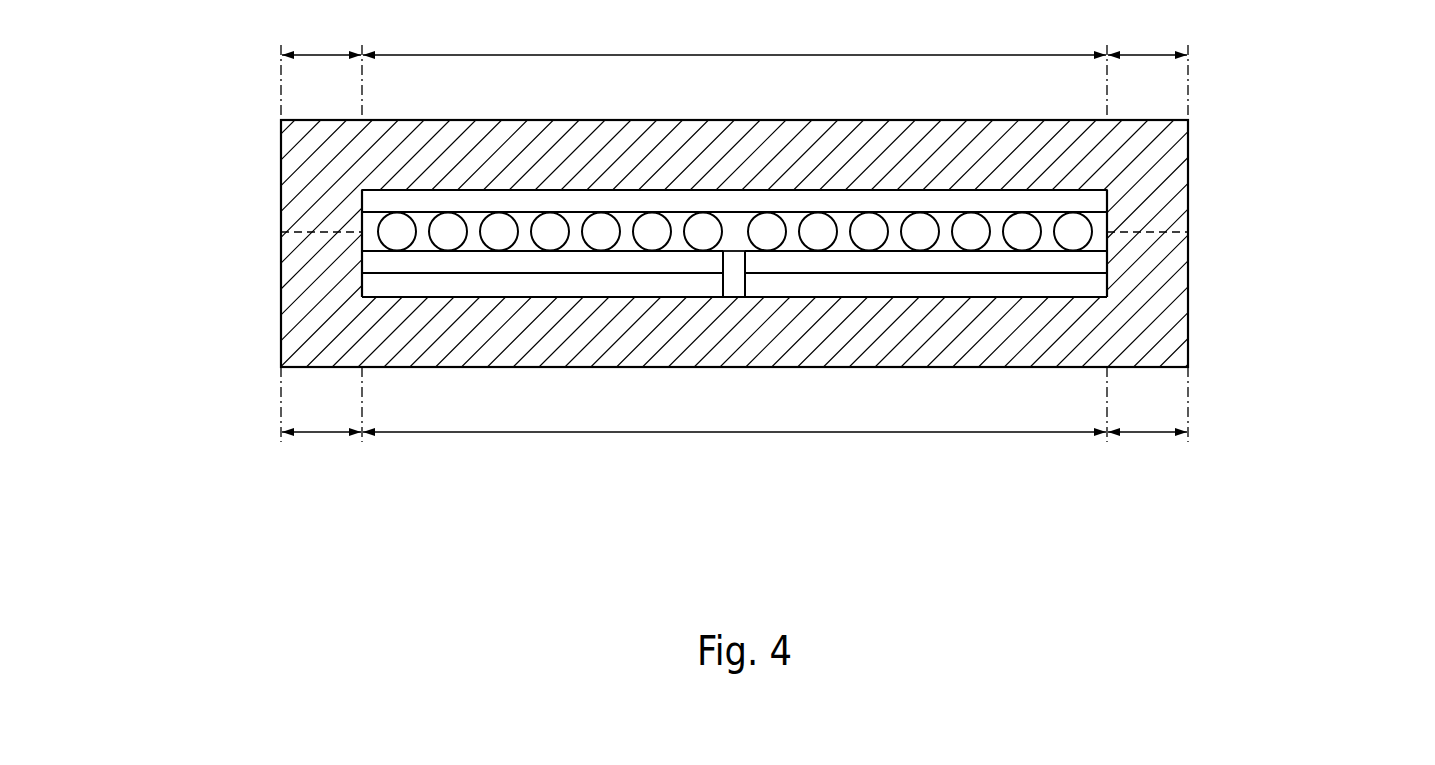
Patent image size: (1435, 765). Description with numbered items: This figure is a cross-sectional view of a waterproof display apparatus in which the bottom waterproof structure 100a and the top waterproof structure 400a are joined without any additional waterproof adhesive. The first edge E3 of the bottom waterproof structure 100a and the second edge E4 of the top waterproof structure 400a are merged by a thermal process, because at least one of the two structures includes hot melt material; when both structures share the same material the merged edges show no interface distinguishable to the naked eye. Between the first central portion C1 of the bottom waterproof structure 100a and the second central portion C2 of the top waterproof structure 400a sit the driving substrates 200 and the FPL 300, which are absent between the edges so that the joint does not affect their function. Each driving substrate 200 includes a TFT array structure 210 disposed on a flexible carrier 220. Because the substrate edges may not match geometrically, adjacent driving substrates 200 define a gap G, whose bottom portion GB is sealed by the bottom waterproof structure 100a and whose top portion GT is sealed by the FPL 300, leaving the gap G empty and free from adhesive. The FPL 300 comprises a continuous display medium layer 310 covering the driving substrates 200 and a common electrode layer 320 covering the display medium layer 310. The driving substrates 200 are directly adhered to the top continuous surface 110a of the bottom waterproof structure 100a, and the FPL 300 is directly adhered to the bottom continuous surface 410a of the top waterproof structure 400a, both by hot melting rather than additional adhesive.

The bottom waterproof structure 100a is at (302, 345).
The top continuous surface 110a is at (380, 306).
The top waterproof structure 400a is at (1165, 180).
The bottom continuous surface 410a is at (1095, 210).
The FPL 300 is at (122, 117).
The display medium layer 310 is at (377, 222).
The common electrode layer 320 is at (377, 202).
The driving substrate 200 is at (122, 250).
The thin film transistor (TFT) array structure 210 is at (375, 262).
The carrier 220 is at (375, 286).
The gap G is at (747, 275).
The top portion GT is at (735, 250).
The bottom portion GB is at (735, 298).
The second edge E4 is at (734, 37).
The first edge E3 is at (734, 450).
The second central portion C2 is at (734, 37).
The first central portion C1 is at (734, 450).